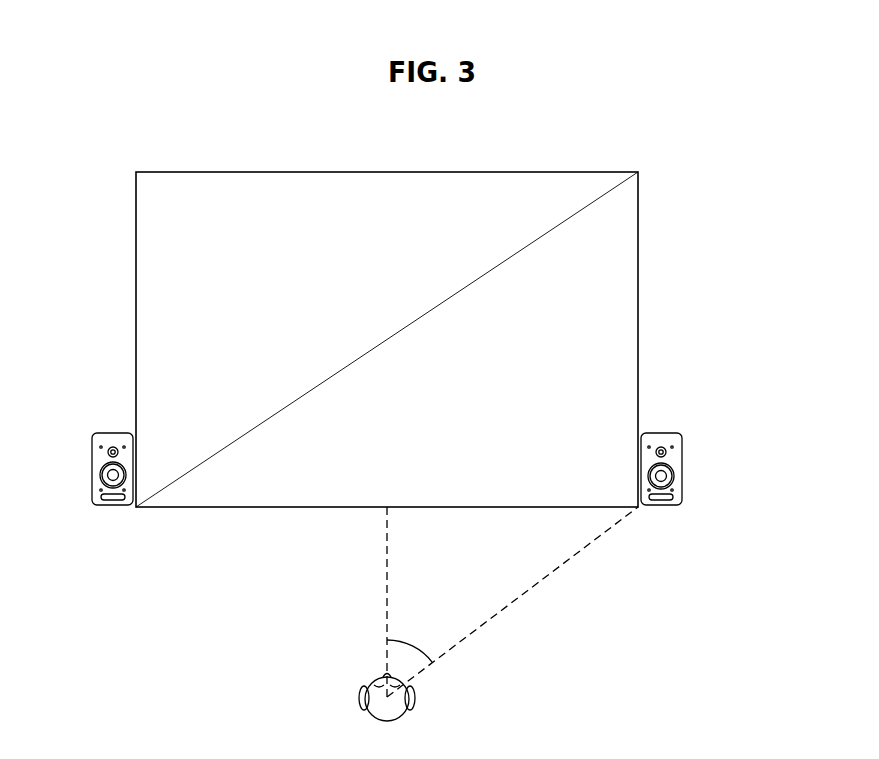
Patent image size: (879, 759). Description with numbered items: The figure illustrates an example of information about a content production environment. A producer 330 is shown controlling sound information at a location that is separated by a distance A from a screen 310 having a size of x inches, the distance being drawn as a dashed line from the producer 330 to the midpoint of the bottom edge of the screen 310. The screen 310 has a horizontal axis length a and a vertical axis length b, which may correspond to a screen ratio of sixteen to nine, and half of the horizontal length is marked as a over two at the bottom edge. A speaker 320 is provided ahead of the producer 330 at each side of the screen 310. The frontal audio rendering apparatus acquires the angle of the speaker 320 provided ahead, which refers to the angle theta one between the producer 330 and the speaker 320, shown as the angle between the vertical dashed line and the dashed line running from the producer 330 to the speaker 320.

The screen 310 is at (535, 172).
The speaker 320 is at (683, 433).
The producer 330 is at (413, 697).